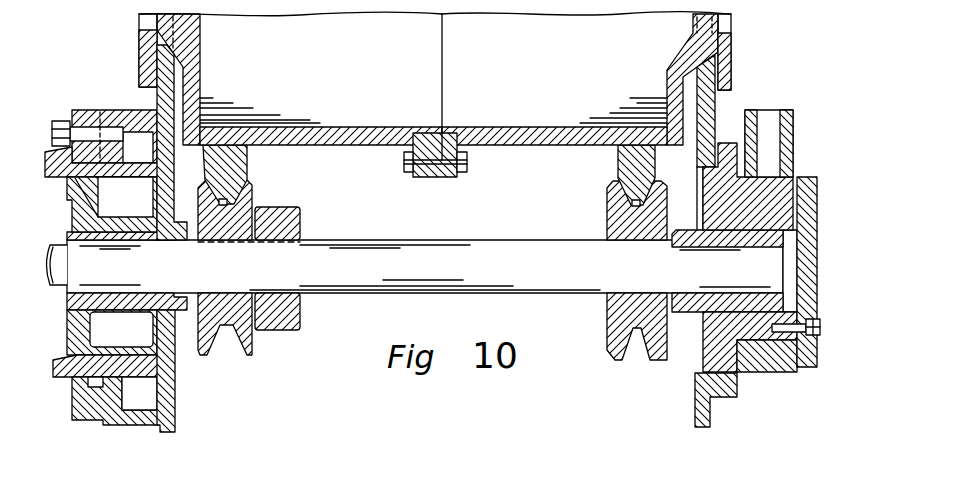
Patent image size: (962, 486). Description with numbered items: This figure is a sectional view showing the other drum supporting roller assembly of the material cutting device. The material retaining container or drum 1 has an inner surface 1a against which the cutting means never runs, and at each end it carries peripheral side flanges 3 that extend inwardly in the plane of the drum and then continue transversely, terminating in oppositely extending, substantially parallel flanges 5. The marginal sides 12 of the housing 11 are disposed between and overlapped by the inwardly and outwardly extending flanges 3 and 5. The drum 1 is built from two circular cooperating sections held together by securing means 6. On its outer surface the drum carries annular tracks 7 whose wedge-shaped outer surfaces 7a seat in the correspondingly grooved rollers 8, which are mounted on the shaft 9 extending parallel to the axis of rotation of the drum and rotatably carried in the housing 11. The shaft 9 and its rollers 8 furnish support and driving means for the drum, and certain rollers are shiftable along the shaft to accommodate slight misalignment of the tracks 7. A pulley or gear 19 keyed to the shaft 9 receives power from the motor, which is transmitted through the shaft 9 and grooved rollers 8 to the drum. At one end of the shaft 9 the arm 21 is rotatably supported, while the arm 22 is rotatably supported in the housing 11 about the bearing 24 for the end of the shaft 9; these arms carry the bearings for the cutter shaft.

The material retaining container or drum 1 is at (365, 128).
The inner surface 1a is at (493, 105).
The peripheral side flanges 3 is at (201, 84).
The oppositely extending flanges 5 is at (140, 62).
The securing means 6 is at (467, 163).
The annular tracks 7 is at (244, 174).
The wedge-shaped outer surfaces 7a is at (252, 192).
The grooved rollers 8 is at (254, 199).
The shaft 9 is at (497, 253).
The housing 11 is at (127, 425).
The marginal sides 12 is at (157, 103).
The pulley or gear 19 is at (302, 212).
The arm 21 is at (760, 110).
The arm 22 is at (46, 150).
The bearing 24 is at (102, 326).